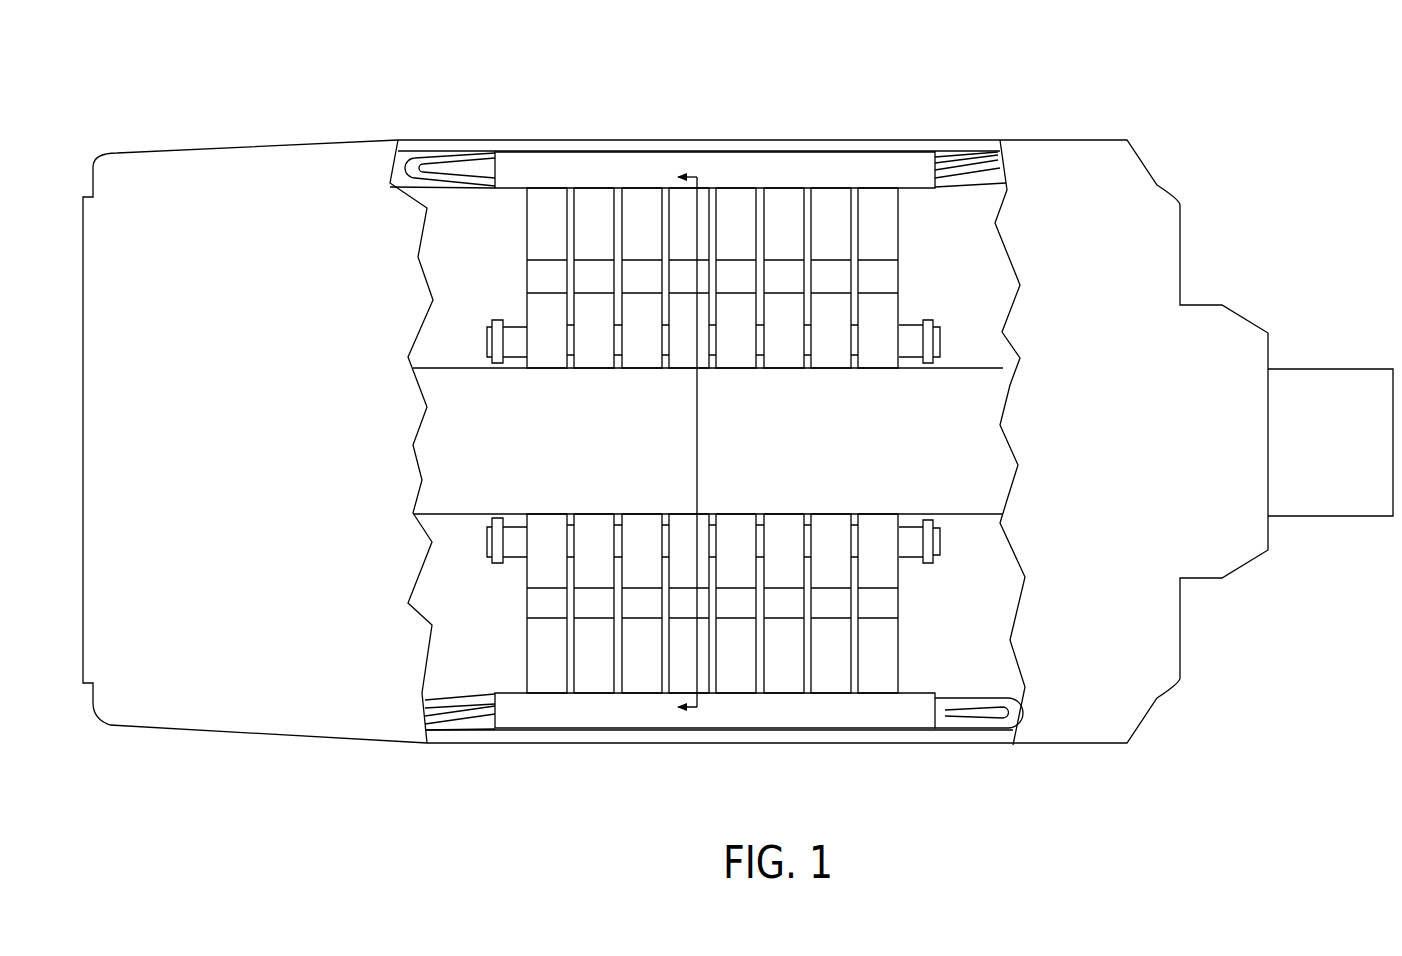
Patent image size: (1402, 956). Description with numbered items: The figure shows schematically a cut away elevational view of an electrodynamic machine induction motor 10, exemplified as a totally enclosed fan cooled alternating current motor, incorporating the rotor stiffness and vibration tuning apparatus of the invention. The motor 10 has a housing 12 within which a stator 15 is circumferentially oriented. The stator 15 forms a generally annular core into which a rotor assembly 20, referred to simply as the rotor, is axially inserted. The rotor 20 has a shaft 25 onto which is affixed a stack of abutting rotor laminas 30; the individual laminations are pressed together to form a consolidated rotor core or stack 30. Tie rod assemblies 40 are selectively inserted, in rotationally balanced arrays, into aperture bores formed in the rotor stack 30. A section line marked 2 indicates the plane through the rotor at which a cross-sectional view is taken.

The induction motor 10 is at (317, 113).
The housing 12 is at (552, 735).
The stator 15 is at (728, 173).
The rotor assembly 20 is at (788, 706).
The shaft 25 is at (990, 420).
The rotor laminas 30 is at (735, 648).
The tie rod assemblies 40 is at (463, 343).
The section line 2- 2 is at (676, 444).